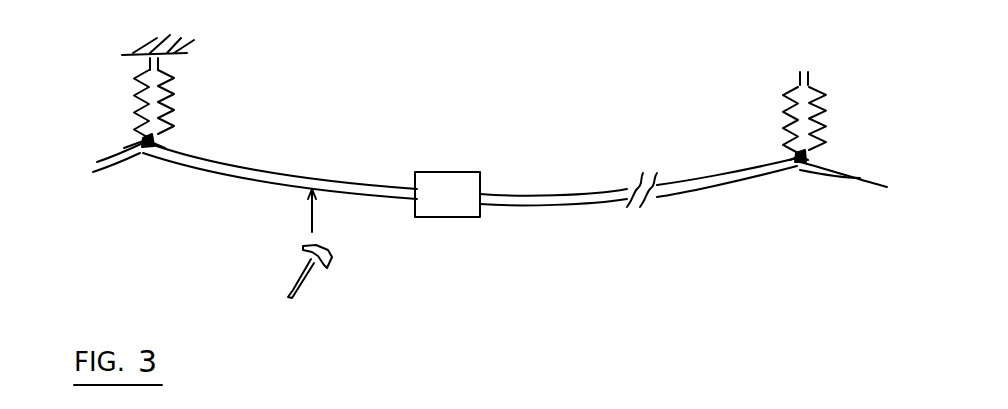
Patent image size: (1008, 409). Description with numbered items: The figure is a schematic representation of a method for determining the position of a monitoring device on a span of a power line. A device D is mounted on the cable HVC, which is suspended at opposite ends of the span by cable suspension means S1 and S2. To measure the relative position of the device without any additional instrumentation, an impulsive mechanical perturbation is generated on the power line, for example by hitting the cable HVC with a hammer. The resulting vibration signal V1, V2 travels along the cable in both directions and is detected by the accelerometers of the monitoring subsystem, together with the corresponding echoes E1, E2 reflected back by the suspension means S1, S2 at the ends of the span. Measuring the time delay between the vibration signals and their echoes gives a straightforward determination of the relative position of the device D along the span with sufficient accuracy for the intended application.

The cable HVC is at (200, 170).
The cable suspension means S1 is at (133, 77).
The cable suspension means S2 is at (812, 90).
The device mounted on cable D is at (442, 218).
The vibration signal V1 is at (300, 80).
The electric field wave travelling from S1 E1 is at (313, 129).
The vibration signal V2 is at (630, 91).
The electric field wave travelling from S2 E2 is at (637, 130).